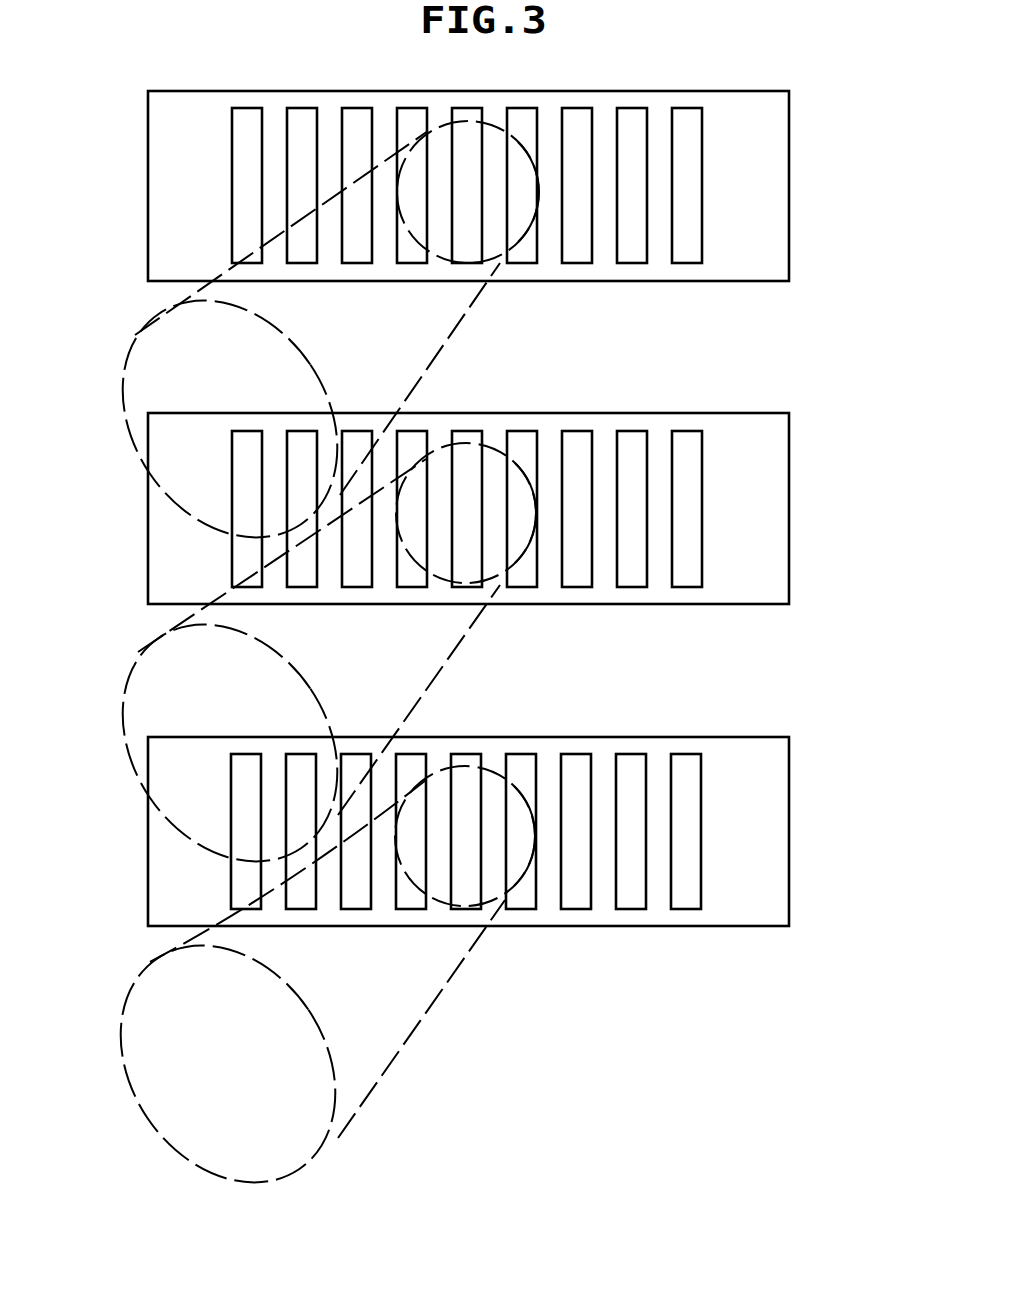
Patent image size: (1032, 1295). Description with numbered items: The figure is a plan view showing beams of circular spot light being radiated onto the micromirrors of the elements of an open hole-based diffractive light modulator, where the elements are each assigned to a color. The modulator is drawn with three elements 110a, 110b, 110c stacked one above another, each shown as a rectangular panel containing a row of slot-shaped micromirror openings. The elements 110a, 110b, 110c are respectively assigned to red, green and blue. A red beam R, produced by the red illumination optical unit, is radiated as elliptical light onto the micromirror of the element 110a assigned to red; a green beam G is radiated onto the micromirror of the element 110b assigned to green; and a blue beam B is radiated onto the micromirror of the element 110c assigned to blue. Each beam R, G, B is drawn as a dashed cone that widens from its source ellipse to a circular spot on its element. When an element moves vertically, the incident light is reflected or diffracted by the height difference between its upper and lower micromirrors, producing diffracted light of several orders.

The element assigned to red 110a is at (789, 186).
The element assigned to green 110b is at (789, 510).
The element assigned to blue 110c is at (789, 833).
The red light R is at (122, 402).
The green light G is at (122, 722).
The blue light B is at (120, 1047).